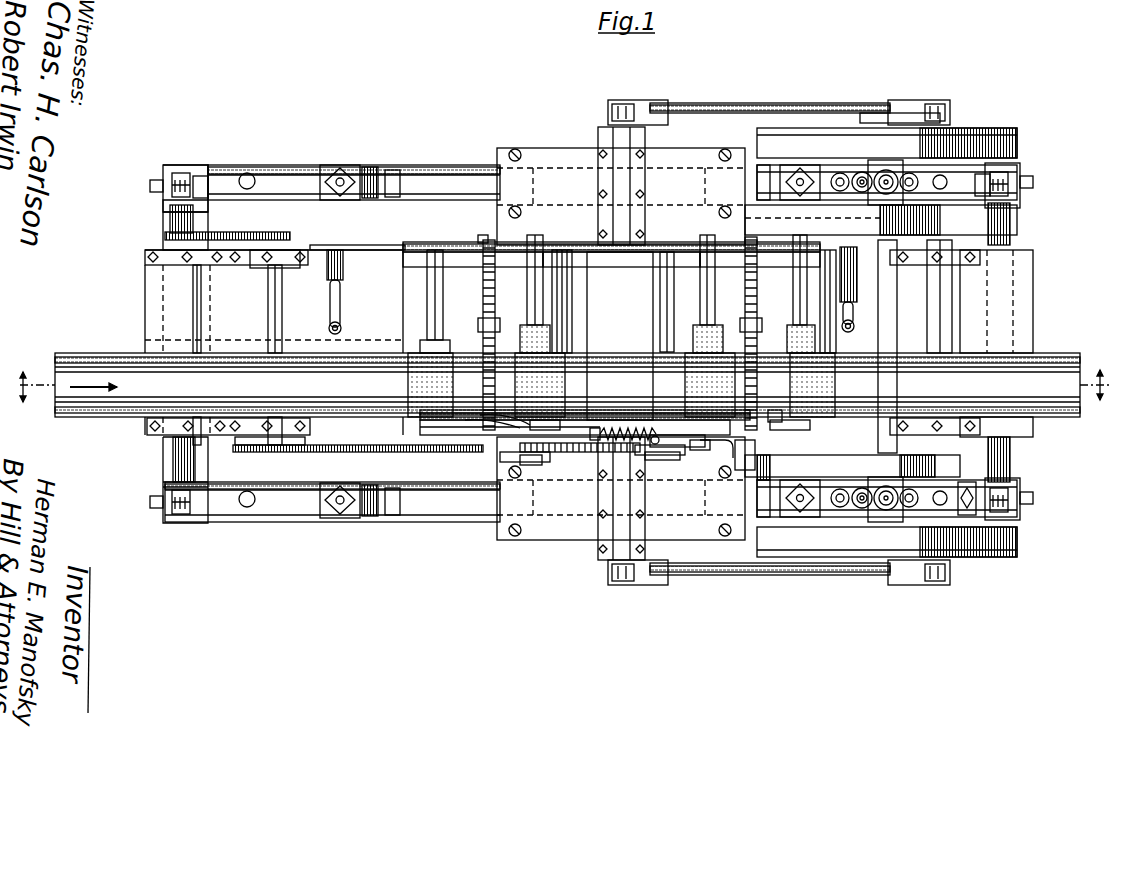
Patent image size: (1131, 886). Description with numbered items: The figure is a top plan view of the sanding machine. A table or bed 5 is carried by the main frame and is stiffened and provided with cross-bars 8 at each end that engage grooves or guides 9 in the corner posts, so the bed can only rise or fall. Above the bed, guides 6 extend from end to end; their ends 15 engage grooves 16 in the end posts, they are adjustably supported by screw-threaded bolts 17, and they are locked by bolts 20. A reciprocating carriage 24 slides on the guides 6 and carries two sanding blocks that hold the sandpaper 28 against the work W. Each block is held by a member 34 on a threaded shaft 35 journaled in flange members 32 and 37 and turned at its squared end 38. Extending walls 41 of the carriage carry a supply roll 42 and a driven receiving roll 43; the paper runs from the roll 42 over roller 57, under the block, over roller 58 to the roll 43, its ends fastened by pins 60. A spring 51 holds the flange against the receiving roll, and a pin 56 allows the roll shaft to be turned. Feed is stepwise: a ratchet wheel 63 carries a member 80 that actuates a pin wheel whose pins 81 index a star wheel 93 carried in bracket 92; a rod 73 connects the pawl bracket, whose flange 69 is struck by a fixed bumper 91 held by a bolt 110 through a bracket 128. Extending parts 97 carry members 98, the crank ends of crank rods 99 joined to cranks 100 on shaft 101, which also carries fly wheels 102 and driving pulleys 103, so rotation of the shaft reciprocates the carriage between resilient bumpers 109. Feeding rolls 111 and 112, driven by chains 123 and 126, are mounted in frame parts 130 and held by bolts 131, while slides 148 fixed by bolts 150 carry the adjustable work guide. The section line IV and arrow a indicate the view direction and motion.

The table or bed 5 is at (380, 252).
The guides 6 is at (455, 175).
The cross-bars 8 is at (178, 218).
The grooves or guides 9 is at (178, 198).
The ends of guides 15 is at (200, 178).
The grooves 16 is at (182, 172).
The screw-threaded members or bolts 17 is at (252, 176).
The bolts 20 is at (175, 172).
The reciprocating carriage 24 is at (553, 155).
The sandpaper 28 is at (400, 385).
The angle or flange member 32 is at (610, 424).
The member 34 is at (480, 322).
The threaded shaft 35 is at (483, 302).
The angle or flange member 37 is at (640, 262).
The squared end 38 is at (478, 241).
The extending walls 41 is at (682, 250).
The supply roll 42 is at (712, 298).
The receiving roll 43 is at (530, 288).
The spring 51 is at (563, 428).
The pin 56 is at (785, 424).
The roller 57 is at (420, 325).
The roller 58 is at (572, 323).
The pins 60 is at (433, 304).
The ratchet wheel 63 is at (715, 458).
The flange 69 is at (653, 460).
The rod 73 is at (625, 432).
The member 80 is at (640, 455).
The pins 81 is at (557, 452).
The bumper 91 is at (910, 495).
The bracket 92 is at (535, 463).
The star wheel 93 is at (550, 465).
The extending parts 97 is at (633, 171).
The members 98 is at (640, 585).
The crank rods 99 is at (790, 108).
The cranks 100 is at (880, 113).
The shaft 101 is at (888, 322).
The fly wheels 102 is at (1002, 140).
The driving pulleys 103 is at (906, 495).
The yielding resilient bumpers 109 is at (392, 178).
The bolt 110 is at (768, 482).
The feeding roll 111 is at (196, 325).
The feeding roll 112 is at (953, 342).
The chain 123 is at (345, 452).
The sprocket chain 126 is at (275, 232).
The bracket or part 128 is at (742, 470).
The frame parts 130 is at (172, 258).
The bolts 131 is at (272, 256).
The slides 148 is at (343, 292).
The bolts 150 is at (328, 328).
The work W is at (77, 392).
The axis a is at (561, 386).
The section line IV is at (1078, 372).